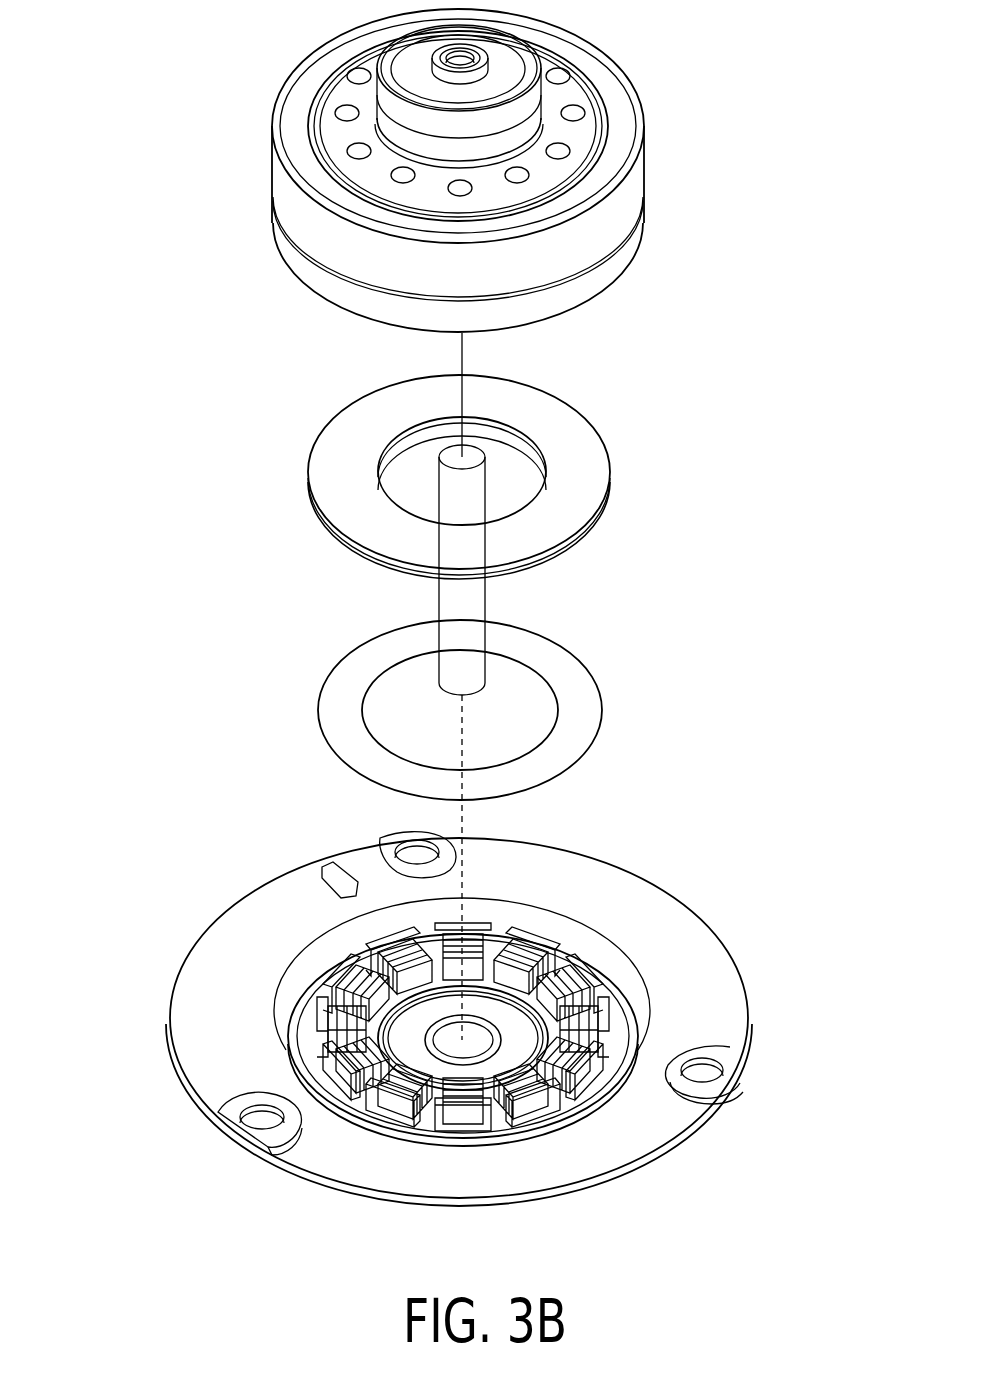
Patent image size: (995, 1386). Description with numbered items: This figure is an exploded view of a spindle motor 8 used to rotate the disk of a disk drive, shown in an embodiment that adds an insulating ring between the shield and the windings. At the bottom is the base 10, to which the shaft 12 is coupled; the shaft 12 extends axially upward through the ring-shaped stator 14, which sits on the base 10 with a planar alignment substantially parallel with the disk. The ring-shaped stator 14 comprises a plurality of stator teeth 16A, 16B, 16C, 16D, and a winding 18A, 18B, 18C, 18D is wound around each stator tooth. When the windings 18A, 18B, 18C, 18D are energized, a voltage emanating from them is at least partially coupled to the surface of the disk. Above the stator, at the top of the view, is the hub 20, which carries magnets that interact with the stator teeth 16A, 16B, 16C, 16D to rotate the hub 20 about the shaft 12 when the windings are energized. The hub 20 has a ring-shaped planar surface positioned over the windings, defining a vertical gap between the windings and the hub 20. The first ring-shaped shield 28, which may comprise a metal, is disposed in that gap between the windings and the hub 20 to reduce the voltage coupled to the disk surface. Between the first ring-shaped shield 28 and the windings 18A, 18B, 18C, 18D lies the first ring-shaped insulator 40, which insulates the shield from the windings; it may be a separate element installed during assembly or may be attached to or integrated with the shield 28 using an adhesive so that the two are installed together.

The spindle motor 8 is at (165, 113).
The base 10 is at (752, 1040).
The shaft 12 is at (485, 599).
The ring-shaped stator 14 is at (448, 965).
The stator tooth 16A is at (360, 958).
The stator tooth 16B is at (338, 1022).
The stator tooth 16C is at (331, 1045).
The stator tooth 16D is at (618, 1030).
The winding 18A is at (341, 996).
The winding 18B is at (324, 1037).
The winding 18C is at (336, 1066).
The winding 18D is at (597, 1031).
The hub 20 is at (644, 172).
The first ring-shaped shield 28 is at (612, 472).
The first ring-shaped insulator 40 is at (602, 712).